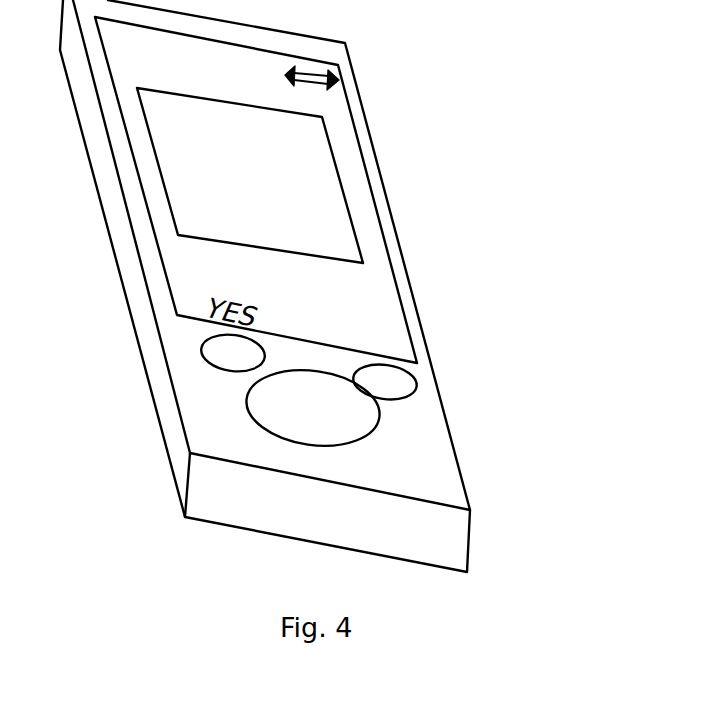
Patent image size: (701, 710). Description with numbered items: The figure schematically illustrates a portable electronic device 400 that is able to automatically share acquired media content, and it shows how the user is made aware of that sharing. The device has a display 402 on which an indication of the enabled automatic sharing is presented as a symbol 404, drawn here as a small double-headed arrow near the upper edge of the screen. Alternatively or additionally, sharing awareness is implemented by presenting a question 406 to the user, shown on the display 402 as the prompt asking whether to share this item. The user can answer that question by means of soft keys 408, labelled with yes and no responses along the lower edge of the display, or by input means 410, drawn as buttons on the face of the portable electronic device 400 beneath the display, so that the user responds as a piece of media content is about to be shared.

The portable electronic device 400 is at (442, 479).
The display 402 is at (342, 140).
The symbol 404 is at (338, 78).
The question 406 is at (315, 193).
The soft keys 408 is at (439, 345).
The input means 410 is at (447, 416).